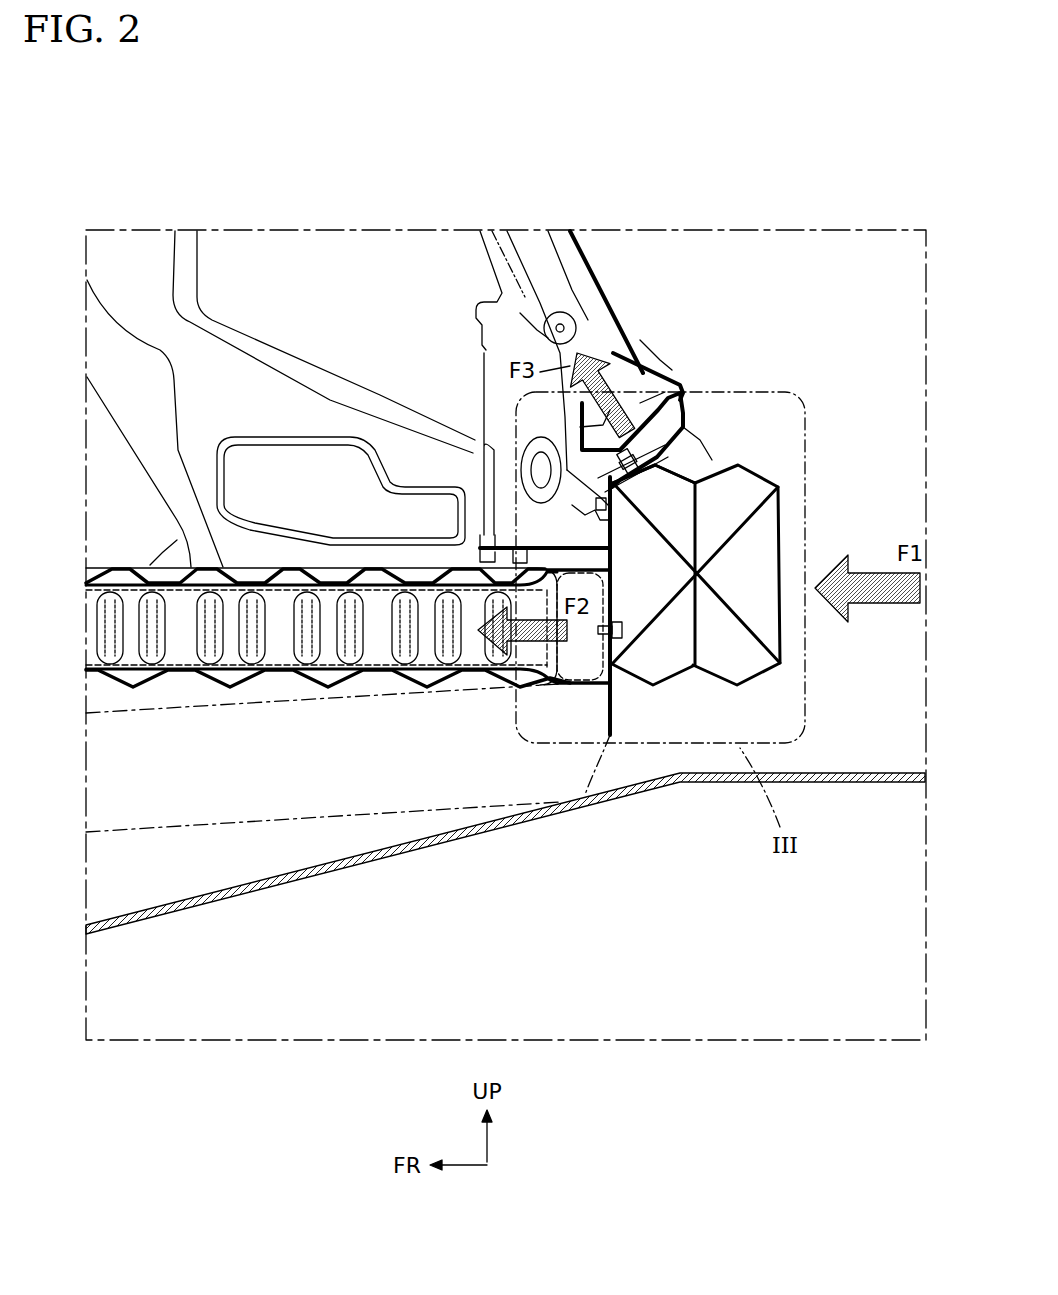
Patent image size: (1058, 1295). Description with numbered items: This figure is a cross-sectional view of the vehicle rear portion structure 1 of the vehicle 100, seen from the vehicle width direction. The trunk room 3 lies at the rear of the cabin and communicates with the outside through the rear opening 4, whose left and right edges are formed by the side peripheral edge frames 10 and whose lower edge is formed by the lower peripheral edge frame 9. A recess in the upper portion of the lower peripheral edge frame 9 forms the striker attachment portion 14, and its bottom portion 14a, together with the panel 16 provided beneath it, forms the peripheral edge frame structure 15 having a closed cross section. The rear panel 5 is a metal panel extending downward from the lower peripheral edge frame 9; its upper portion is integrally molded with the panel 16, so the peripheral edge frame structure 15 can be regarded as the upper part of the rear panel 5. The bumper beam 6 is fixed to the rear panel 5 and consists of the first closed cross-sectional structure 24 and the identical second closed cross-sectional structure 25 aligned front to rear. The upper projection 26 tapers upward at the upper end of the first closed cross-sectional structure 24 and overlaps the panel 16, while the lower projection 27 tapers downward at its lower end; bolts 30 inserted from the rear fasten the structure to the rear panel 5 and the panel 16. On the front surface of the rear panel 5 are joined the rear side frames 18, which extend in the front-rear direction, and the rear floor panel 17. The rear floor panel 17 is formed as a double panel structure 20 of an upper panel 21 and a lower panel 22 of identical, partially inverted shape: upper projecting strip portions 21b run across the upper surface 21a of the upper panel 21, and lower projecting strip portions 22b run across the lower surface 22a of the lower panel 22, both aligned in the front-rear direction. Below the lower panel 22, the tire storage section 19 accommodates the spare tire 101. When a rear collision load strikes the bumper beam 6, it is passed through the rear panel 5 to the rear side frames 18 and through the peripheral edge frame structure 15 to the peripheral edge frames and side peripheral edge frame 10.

The vehicle rear portion structure 1 is at (757, 268).
The vehicle 100 is at (513, 222).
The trunk room 3 is at (332, 405).
The rear opening 4 is at (547, 287).
The side peripheral edge frame 10 is at (587, 263).
The striker attachment portion 14 is at (656, 355).
The bottom portion 14a is at (648, 372).
The lower peripheral edge frame 9 is at (660, 383).
The peripheral edge frame structure 15 is at (697, 407).
The panel 16 is at (693, 433).
The upper projection 26 is at (673, 470).
The bumper beam 6 is at (697, 671).
The first closed cross-sectional structure 24 is at (670, 688).
The second closed cross-sectional structure 25 is at (722, 688).
The lower projection 27 is at (641, 685).
The rear panel 5 is at (612, 740).
The bolt 30 is at (632, 466).
The rear floor panel 17 is at (318, 612).
The double panel structure 20 is at (318, 612).
The upper panel 21 is at (300, 578).
The upper surface 21a is at (428, 580).
The upper projecting strip portion 21b is at (380, 585).
The lower panel 22 is at (328, 687).
The lower surface 22a is at (384, 670).
The lower projecting strip portion 22b is at (432, 692).
The rear side frame 18 is at (295, 662).
The tire storage section 19 is at (200, 690).
The spare tire 101 is at (397, 848).